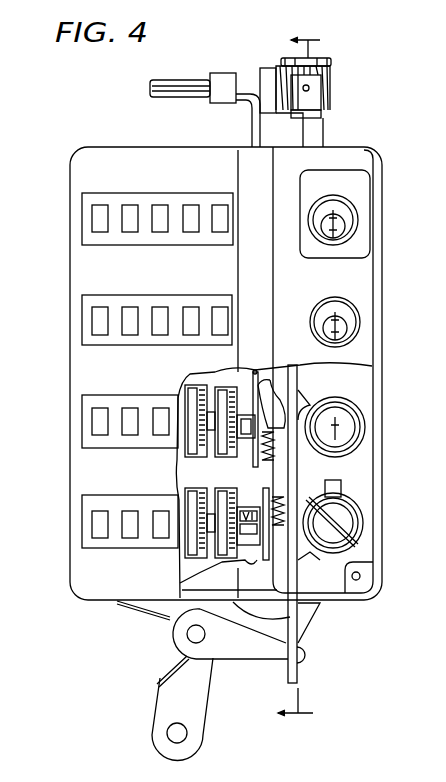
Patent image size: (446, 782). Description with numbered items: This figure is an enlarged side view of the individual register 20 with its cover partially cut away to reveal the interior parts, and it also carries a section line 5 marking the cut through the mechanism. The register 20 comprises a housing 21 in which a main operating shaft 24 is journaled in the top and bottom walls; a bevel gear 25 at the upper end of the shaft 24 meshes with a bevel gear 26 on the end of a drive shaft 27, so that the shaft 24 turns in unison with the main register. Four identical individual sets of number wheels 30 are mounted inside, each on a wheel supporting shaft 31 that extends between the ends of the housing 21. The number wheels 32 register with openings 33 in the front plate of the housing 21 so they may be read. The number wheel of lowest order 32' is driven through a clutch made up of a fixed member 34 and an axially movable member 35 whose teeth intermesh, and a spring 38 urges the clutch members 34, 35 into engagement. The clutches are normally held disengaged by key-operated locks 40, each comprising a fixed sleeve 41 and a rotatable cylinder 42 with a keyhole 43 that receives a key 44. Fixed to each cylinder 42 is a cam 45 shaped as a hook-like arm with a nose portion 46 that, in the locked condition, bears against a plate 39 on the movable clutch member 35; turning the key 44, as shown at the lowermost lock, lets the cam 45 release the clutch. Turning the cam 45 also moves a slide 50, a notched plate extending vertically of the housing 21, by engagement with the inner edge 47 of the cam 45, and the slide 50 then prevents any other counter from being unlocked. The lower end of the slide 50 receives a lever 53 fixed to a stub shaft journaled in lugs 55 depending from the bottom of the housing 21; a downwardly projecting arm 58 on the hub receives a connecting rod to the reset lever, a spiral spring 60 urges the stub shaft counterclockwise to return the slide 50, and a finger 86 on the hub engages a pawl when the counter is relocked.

The section line 5- 5 is at (310, 377).
The individual register 20 is at (93, 141).
The housing 21 is at (150, 223).
The main operating shaft 24 is at (322, 110).
The bevel gear 25 is at (333, 64).
The bevel gear 26 is at (278, 68).
The drive shaft 27 is at (166, 80).
The individual set of number wheels 30 is at (92, 232).
The wheel supporting shaft 31 is at (210, 440).
The number wheel 32 is at (173, 352).
The number wheel of lowest order 32' is at (185, 377).
The opening 33 is at (106, 205).
The fixed clutch member 34 is at (284, 498).
The axially movable clutch member 35 is at (268, 458).
The spring 38 is at (247, 507).
The plate 39 is at (255, 374).
The key-operated lock 40 is at (359, 213).
The fixed sleeve 41 is at (352, 204).
The rotatable cylinder 42 is at (347, 225).
The keyhole 43 is at (333, 214).
The key 44 is at (362, 540).
The cam 45 is at (375, 370).
The nose portion 46 is at (272, 383).
The inner edge 47 is at (303, 390).
The slide 50 is at (288, 680).
The lever 53 is at (233, 659).
The lug 55 is at (168, 620).
The arm 58 is at (165, 702).
The spiral spring 60 is at (160, 675).
The finger 86 is at (310, 618).